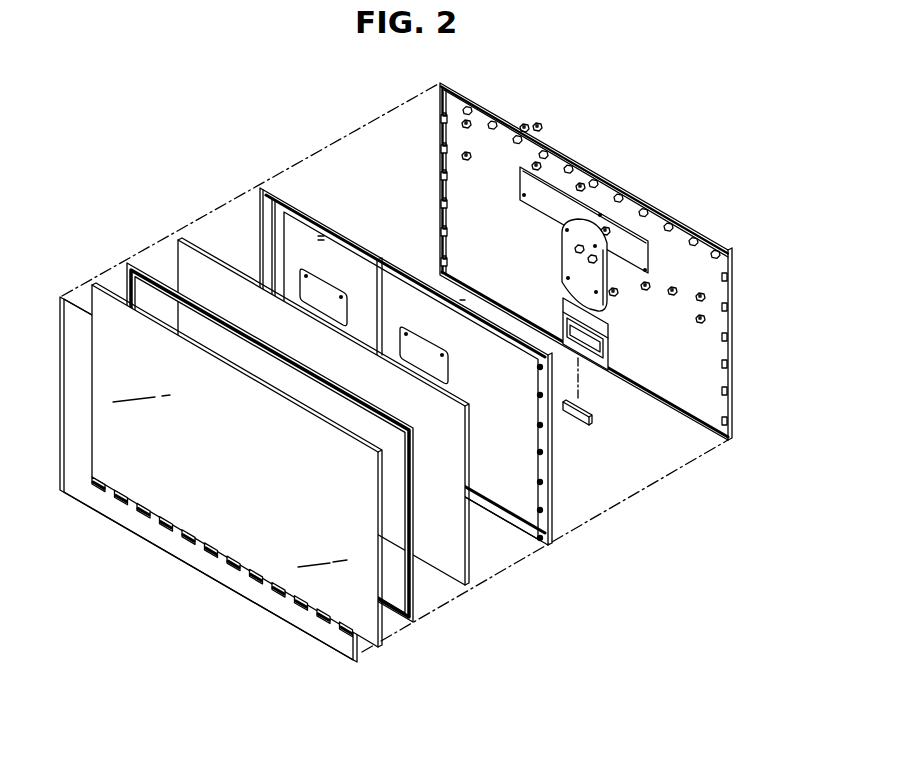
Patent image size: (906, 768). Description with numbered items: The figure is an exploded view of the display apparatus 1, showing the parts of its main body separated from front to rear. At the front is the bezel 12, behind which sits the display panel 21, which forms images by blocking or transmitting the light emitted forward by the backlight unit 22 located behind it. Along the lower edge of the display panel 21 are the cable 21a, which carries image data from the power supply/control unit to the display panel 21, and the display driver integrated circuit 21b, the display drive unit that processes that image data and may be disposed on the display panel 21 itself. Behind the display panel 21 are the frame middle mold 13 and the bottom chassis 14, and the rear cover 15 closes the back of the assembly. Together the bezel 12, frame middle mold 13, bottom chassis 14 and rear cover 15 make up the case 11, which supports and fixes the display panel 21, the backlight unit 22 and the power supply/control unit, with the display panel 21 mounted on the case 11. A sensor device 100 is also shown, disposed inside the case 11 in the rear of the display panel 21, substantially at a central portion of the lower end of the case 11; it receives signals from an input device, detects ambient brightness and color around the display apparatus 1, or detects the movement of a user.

The display apparatus 1 is at (257, 132).
The case 11 is at (412, 384).
The bezel 12 is at (303, 633).
The frame middle mold 13 is at (422, 597).
The bottom chassis 14 is at (547, 518).
The rear cover 15 is at (712, 442).
The display panel 21 is at (264, 481).
The cable 21a is at (183, 533).
The display driver integrated circuit 21b is at (185, 540).
The backlight unit 22 is at (465, 570).
The sensor device 100 is at (585, 428).